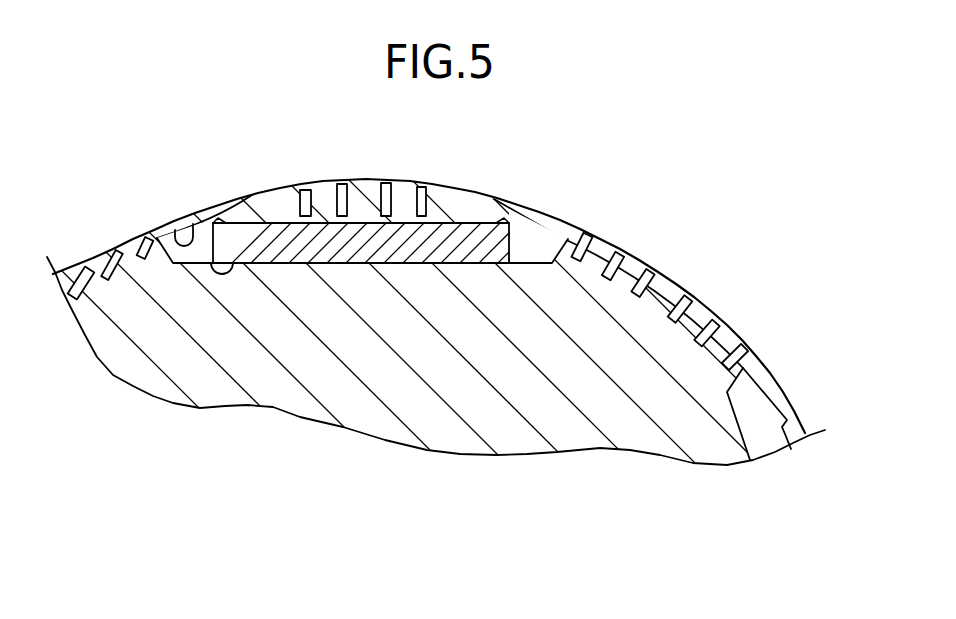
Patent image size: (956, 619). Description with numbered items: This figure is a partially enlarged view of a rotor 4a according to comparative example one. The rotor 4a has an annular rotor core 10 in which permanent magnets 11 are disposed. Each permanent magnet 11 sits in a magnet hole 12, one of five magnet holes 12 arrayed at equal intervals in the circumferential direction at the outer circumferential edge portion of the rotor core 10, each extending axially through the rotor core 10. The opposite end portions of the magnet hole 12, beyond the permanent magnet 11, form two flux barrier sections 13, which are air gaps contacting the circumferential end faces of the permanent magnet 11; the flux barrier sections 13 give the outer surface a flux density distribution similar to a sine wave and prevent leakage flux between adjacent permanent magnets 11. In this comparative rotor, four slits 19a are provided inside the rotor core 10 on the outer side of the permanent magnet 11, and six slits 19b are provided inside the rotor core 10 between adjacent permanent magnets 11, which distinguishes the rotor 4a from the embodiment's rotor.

The rotor 4a is at (753, 354).
The rotor core 10 is at (113, 348).
The permanent magnet 11 is at (285, 240).
The magnet hole 12 is at (213, 262).
The flux barrier section 13 is at (173, 242).
The slit 19a is at (352, 188).
The slit 19b is at (574, 236).